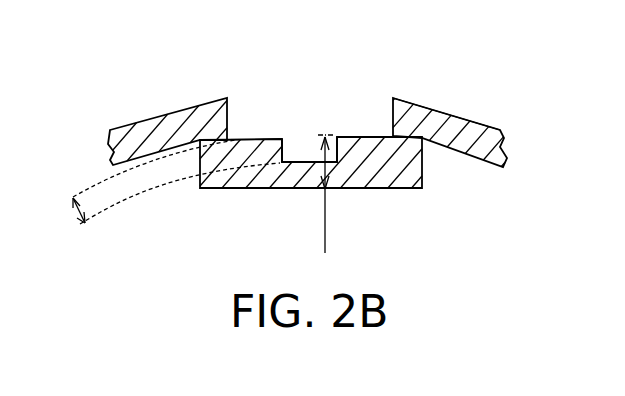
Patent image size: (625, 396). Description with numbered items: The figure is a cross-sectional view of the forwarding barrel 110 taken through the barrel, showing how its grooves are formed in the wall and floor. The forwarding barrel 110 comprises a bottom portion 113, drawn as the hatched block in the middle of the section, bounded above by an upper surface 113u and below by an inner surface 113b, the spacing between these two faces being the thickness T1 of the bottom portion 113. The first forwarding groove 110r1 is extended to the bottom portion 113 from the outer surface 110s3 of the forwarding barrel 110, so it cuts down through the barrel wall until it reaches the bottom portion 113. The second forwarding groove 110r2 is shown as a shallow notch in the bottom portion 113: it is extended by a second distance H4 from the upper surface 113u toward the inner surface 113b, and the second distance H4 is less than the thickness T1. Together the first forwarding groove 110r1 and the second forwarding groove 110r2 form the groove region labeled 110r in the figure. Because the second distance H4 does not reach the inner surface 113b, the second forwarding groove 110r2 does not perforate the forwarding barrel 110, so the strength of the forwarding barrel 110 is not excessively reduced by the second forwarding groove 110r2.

The forwarding barrel 110 is at (150, 102).
The recess 110r is at (413, 46).
The first forwarding groove 110r1 is at (393, 137).
The second forwarding groove 110r2 is at (284, 145).
The outer surface 110s3 is at (470, 121).
The bottom portion 113 is at (370, 189).
The upper surface 113u is at (258, 136).
The inner surface 113b is at (257, 189).
The thickness T1 is at (311, 194).
The second distance H4 is at (59, 215).